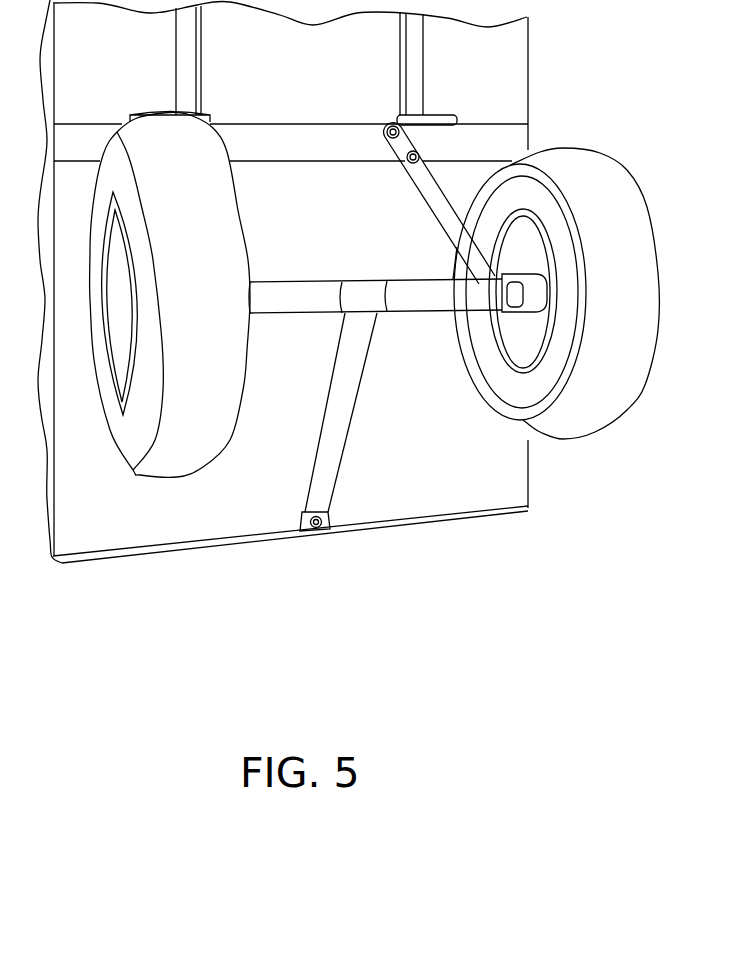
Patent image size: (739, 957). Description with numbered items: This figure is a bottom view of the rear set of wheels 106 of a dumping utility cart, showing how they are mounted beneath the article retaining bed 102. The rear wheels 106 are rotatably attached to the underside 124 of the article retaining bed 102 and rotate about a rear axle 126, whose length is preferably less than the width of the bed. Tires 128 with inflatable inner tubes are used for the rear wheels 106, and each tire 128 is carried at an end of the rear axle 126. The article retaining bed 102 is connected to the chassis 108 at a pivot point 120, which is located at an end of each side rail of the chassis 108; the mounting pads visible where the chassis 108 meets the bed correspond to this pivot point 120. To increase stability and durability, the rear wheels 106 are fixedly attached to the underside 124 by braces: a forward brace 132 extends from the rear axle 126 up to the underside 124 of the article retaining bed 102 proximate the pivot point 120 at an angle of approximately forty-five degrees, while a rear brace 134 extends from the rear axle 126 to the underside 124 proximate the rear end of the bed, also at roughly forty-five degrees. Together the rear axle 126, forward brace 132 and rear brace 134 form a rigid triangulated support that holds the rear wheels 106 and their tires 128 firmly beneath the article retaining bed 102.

The article retaining bed 102 is at (103, 527).
The rear set of wheels 106 is at (495, 355).
The chassis 108 is at (400, 42).
The pivot point 120 is at (137, 113).
The underside 124 is at (437, 478).
The rear axle 126 is at (427, 298).
The tires 128 is at (177, 460).
The forward brace 132 is at (447, 220).
The rear brace 134 is at (338, 490).